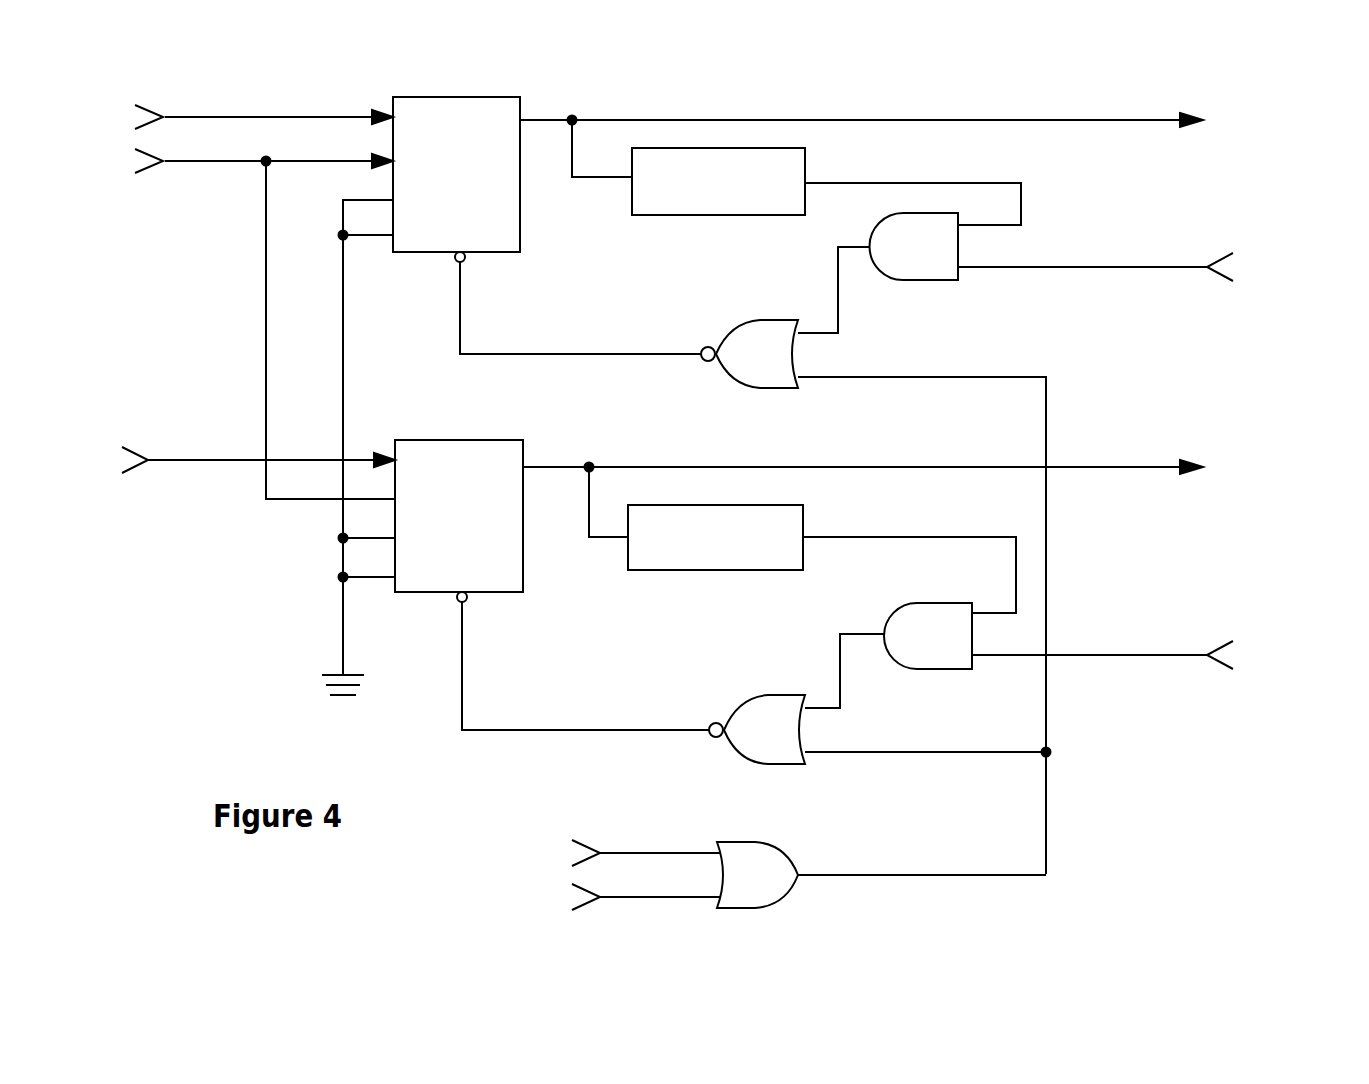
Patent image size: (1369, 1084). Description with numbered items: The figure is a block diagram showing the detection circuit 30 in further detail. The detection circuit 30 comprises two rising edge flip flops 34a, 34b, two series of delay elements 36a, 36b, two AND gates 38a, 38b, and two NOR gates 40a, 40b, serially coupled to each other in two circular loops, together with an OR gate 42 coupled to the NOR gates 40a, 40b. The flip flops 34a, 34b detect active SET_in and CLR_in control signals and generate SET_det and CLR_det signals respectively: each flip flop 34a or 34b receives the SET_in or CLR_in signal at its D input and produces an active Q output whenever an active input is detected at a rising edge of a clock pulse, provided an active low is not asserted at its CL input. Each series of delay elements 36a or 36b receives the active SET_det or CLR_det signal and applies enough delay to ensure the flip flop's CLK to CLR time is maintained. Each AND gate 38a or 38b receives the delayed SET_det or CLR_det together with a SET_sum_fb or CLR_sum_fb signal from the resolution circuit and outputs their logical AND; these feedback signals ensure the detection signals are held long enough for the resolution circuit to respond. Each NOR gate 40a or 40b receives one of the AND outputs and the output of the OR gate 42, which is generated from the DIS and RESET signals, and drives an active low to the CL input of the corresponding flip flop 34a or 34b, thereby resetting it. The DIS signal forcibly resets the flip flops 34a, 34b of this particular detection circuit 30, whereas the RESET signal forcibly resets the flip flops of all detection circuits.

The detection circuit 30 is at (1353, 508).
The rising edge flip flop 34a is at (457, 102).
The rising edge flip flop 34b is at (447, 452).
The series of delay elements 36a is at (800, 169).
The series of delay elements 36b is at (798, 525).
The AND gate 38a is at (935, 265).
The AND gate 38b is at (937, 658).
The NOR gate 40a is at (758, 335).
The NOR gate 40b is at (748, 715).
The OR gate 42 is at (763, 893).